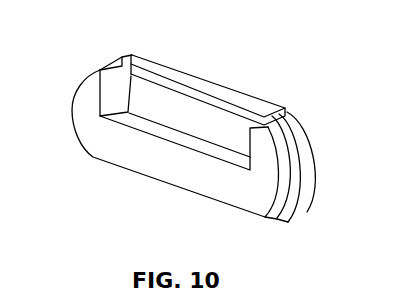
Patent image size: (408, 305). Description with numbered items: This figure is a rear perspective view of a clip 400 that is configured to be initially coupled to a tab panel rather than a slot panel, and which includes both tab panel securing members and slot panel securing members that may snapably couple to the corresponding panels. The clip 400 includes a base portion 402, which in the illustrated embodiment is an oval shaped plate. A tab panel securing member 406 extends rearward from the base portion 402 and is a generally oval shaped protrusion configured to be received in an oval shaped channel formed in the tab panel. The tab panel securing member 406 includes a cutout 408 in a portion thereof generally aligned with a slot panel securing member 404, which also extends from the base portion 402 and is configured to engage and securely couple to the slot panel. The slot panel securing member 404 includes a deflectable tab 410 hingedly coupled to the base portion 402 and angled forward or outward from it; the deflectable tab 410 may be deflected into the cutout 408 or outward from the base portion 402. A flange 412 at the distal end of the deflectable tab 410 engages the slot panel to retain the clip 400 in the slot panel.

The clip 400 is at (242, 42).
The base portion 402 is at (308, 196).
The slot panel securing member 404 is at (222, 98).
The tab panel securing member 406 is at (279, 202).
The cutout 408 is at (112, 90).
The deflectable tab 410 is at (137, 37).
The flange 412 is at (177, 103).